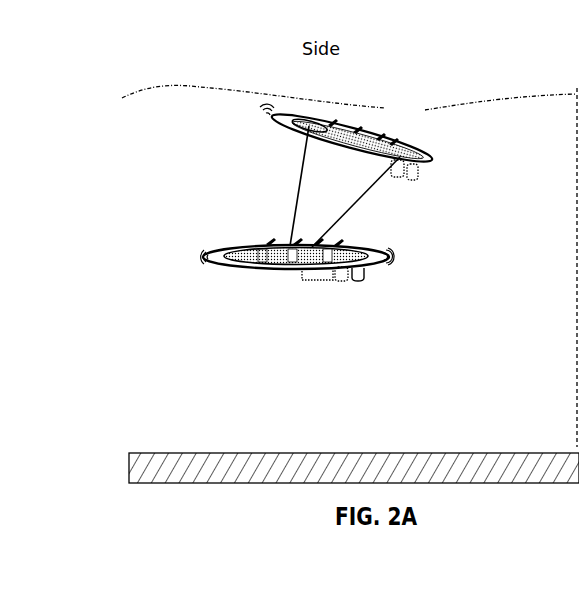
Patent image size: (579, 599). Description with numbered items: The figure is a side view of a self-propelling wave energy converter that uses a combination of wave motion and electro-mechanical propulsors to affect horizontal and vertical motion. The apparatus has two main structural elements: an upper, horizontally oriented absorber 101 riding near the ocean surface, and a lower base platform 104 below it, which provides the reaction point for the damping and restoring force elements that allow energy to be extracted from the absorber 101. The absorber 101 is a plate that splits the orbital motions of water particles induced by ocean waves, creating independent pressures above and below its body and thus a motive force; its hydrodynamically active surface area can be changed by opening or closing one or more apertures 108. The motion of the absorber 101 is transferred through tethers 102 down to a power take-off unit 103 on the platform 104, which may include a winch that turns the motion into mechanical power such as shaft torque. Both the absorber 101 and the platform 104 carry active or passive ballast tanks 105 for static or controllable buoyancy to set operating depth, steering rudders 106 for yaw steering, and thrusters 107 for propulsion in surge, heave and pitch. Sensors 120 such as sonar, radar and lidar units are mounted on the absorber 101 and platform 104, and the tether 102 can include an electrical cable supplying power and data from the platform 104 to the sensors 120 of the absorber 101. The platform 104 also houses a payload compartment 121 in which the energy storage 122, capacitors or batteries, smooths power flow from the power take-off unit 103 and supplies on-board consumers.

The absorber 101 is at (280, 127).
The tether 102 is at (300, 168).
The power take-off unit 103 is at (256, 247).
The lower base platform 104 is at (235, 270).
The ballast tank 105 is at (396, 175).
The steering rudder 106 is at (432, 170).
The thruster 107 is at (336, 119).
The aperture 108 is at (345, 92).
The sensor 120 is at (205, 264).
The payload compartment 121 is at (300, 272).
The energy storage 122 is at (340, 282).